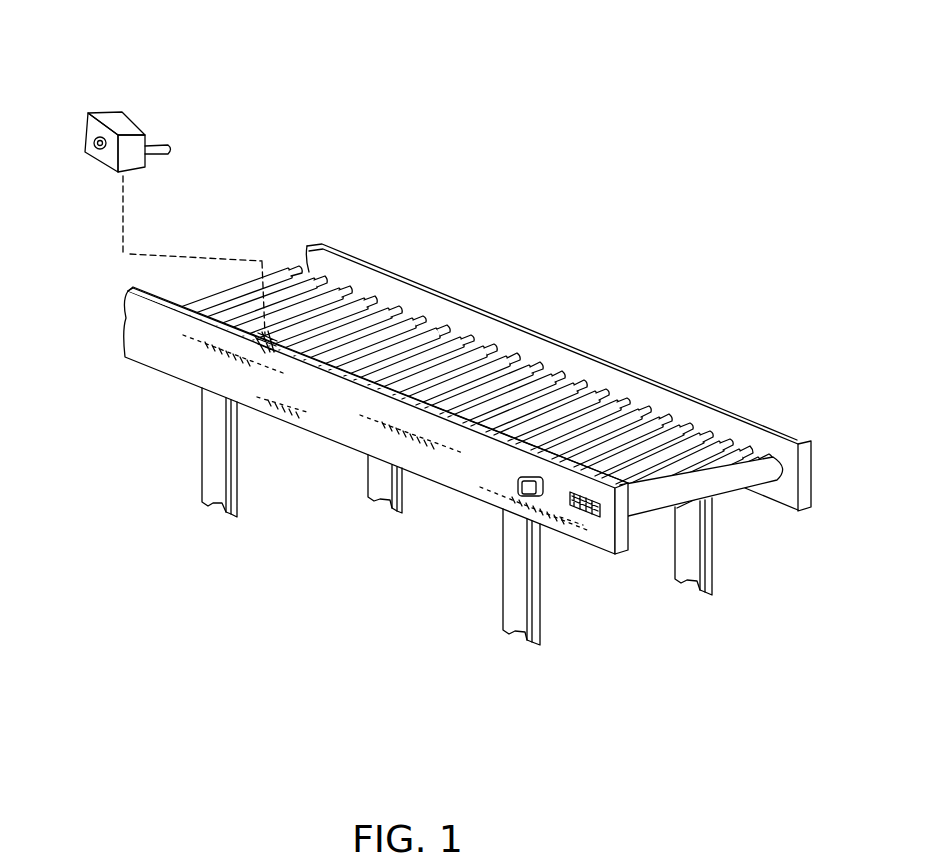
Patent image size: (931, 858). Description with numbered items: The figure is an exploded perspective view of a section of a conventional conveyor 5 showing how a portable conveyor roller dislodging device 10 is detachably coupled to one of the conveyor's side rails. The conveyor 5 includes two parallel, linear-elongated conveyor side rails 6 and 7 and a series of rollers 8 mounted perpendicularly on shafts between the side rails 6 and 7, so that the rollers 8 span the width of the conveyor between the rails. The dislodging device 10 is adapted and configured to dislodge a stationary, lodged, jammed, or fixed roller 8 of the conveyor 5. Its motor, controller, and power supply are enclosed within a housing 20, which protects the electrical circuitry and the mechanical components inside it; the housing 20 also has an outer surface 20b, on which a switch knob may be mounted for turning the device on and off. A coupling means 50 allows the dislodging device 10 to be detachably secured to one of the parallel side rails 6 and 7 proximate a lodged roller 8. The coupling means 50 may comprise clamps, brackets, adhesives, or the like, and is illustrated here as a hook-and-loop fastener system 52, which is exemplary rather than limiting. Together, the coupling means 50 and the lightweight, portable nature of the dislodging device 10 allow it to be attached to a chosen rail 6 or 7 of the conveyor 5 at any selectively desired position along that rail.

The conveyor 5 is at (467, 435).
The conveyor side rail 6 is at (638, 373).
The conveyor side rail 7 is at (367, 388).
The rollers 8 is at (363, 310).
The portable conveyor roller dislodging device 10 is at (186, 343).
The housing 20 is at (107, 117).
The outer surface of housing 20b is at (92, 142).
The coupling means 50 is at (130, 172).
The hook-and-loop fastener system 52 is at (265, 335).